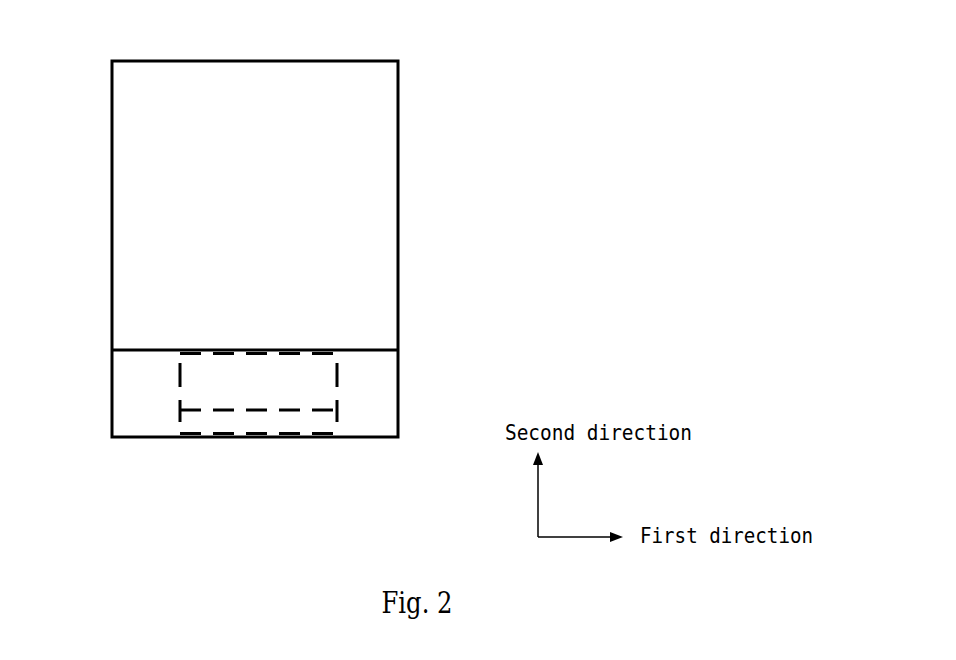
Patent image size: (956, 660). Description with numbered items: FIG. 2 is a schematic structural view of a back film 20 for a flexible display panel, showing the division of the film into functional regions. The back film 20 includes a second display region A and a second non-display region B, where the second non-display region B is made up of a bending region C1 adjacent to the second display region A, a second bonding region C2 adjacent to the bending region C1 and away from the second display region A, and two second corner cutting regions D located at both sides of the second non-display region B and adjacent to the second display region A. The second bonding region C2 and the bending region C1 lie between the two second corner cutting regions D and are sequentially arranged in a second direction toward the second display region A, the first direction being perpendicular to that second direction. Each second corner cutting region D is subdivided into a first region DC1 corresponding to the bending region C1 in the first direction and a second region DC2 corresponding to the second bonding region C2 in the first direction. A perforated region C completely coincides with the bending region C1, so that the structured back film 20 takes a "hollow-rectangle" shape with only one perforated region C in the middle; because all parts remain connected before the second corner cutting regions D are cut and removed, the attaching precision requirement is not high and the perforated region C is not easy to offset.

The back film 20 is at (401, 38).
The second display region A is at (417, 62).
The second non-display region B is at (417, 350).
The perforated region C is at (312, 365).
The bending region C1 is at (280, 382).
The second bonding region C2 is at (253, 420).
The second corner cutting region D is at (372, 382).
The first region DC1 is at (107, 355).
The second region DC2 is at (107, 437).